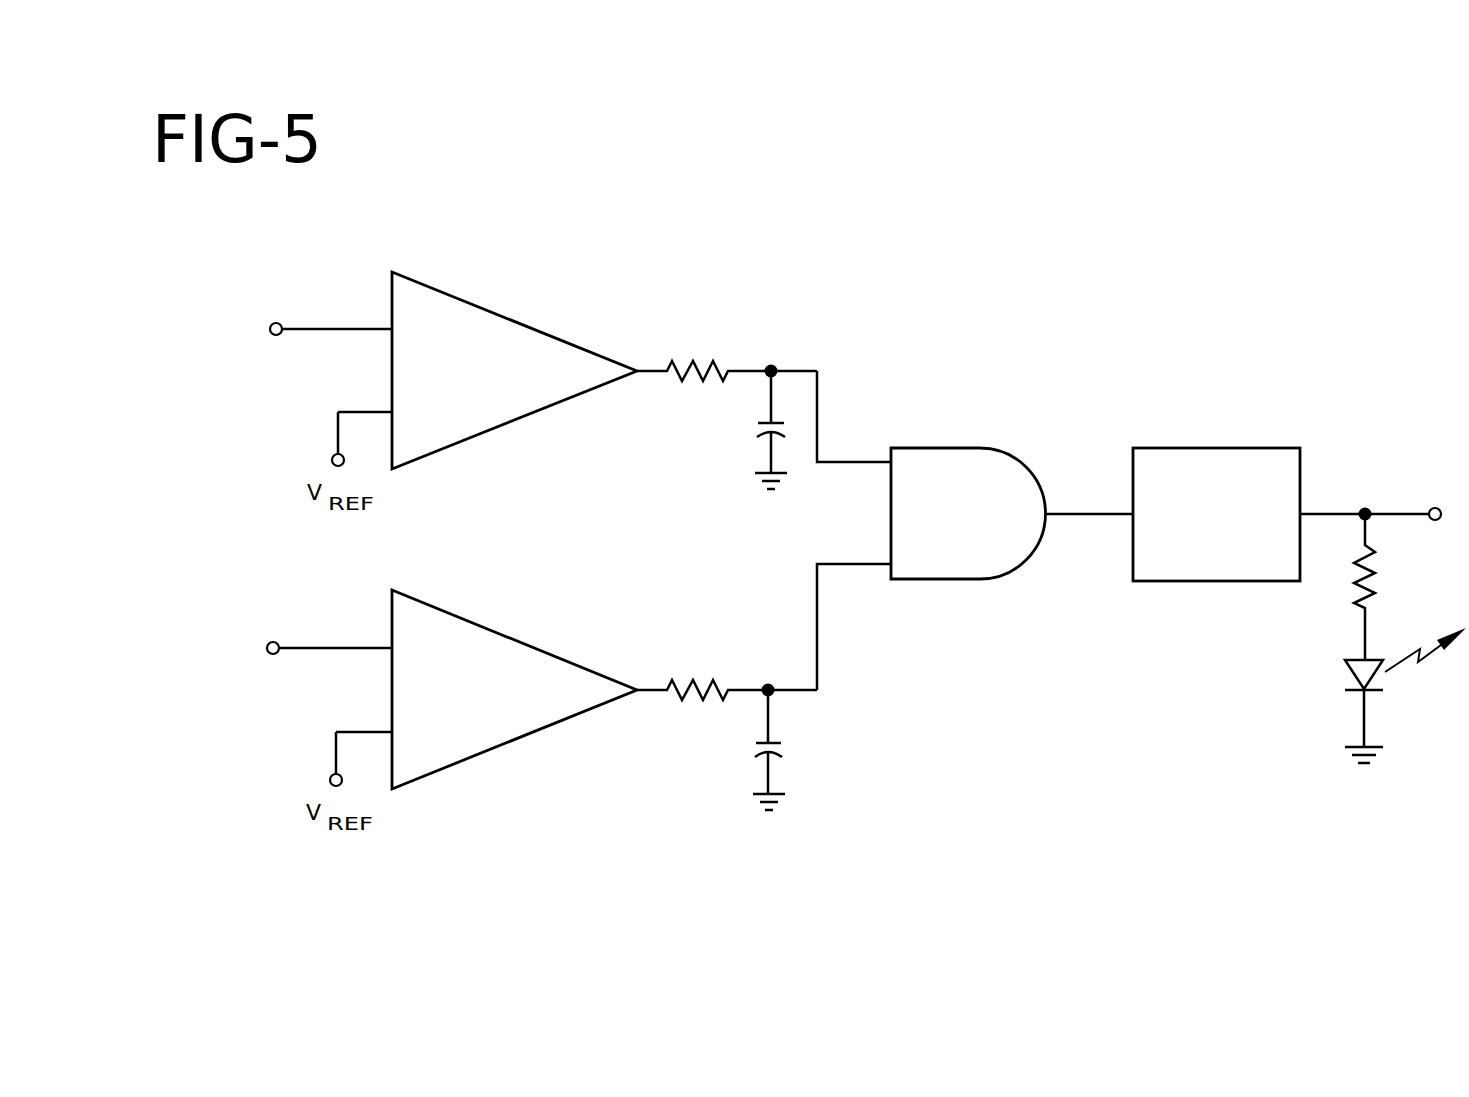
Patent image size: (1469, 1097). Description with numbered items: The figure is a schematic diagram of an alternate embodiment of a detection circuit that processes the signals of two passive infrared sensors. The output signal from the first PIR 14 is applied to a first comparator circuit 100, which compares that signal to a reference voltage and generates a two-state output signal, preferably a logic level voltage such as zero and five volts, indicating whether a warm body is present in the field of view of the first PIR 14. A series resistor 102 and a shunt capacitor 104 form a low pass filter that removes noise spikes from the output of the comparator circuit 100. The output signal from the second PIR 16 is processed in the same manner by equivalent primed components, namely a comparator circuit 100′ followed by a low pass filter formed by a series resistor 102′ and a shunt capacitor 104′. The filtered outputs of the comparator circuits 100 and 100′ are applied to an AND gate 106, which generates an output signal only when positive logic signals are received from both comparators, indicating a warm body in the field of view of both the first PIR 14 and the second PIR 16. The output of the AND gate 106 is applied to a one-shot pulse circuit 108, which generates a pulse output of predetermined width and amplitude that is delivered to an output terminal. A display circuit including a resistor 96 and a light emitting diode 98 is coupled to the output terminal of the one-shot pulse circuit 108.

The first PIR 14 is at (278, 330).
The second PIR 16 is at (269, 648).
The first comparator circuit 100 is at (462, 299).
The comparator circuit 100′ is at (459, 617).
The series resistor 102 is at (681, 364).
The series resistor 102′ is at (680, 683).
The shunt capacitor 104 is at (758, 421).
The shunt capacitor 104′ is at (757, 741).
The AND gate 106 is at (932, 448).
The one-shot pulse circuit 108 is at (1180, 448).
The resistor 96 is at (1354, 583).
The light emitting diode 98 is at (1345, 672).